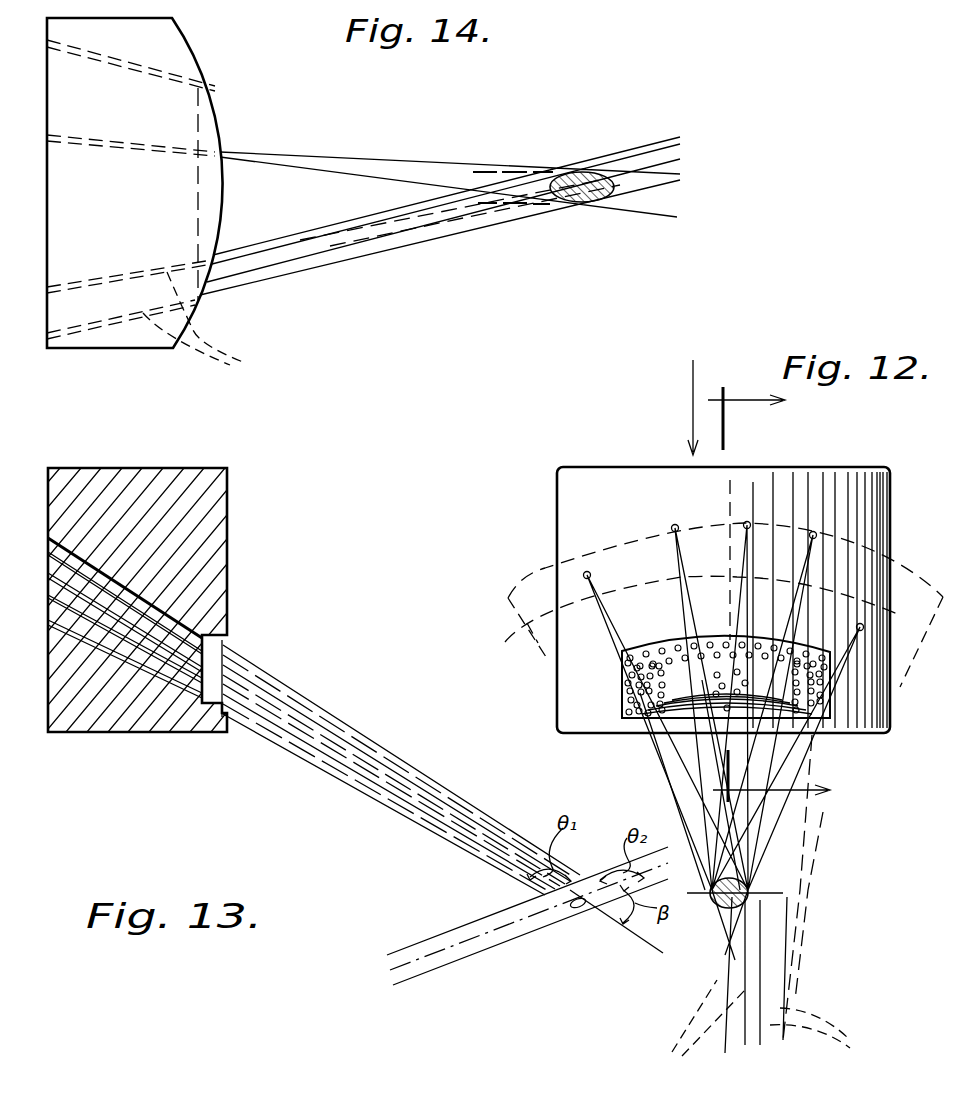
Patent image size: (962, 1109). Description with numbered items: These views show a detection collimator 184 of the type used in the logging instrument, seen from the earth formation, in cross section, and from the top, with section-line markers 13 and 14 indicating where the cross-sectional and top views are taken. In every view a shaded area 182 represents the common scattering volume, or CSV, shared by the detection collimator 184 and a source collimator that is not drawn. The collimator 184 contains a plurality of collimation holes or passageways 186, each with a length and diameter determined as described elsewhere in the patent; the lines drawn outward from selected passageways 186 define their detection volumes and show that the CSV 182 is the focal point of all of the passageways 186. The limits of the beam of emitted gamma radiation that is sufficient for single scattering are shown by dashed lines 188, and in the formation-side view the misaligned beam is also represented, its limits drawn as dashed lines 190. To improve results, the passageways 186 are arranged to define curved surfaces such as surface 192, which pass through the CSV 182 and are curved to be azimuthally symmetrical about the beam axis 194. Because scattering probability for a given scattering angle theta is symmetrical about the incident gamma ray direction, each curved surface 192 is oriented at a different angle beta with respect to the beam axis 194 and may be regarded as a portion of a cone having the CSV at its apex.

In FIG. 14, the shaded area representative of the CSV 182 is at (593, 173).
In FIG. 12, the shaded area representative of the CSV 182 is at (743, 912).
In FIG. 13, the shaded area representative of the CSV 182 is at (583, 903).
In FIG. 14, the detection collimator 184 is at (193, 45).
In FIG. 12, the detection collimator 184 is at (608, 467).
In FIG. 13, the detection collimator 184 is at (110, 467).
In FIG. 14, the collimation holes or passageways 186 is at (217, 320).
In FIG. 12, the collimation holes or passageways 186 is at (706, 605).
In FIG. 13, the collimation holes or passageways 186 is at (167, 660).
In FIG. 14, the dashed lines showing limits of emitted gamma radiation beam 188 is at (505, 170).
In FIG. 12, the dashed lines showing limits of emitted gamma radiation beam 188 is at (700, 1033).
In FIG. 12, the dashed lines showing limits of misaligned beam 190 is at (833, 1034).
In FIG. 12, the curved surface 192 is at (620, 655).
In FIG. 13, the curved surface 192 is at (298, 698).
In FIG. 13, the beam axis 194 is at (428, 960).
In FIG. 12, the section line for FIG. 13 is at (785, 597).
In FIG. 12, the section line for FIG. 14 is at (690, 380).